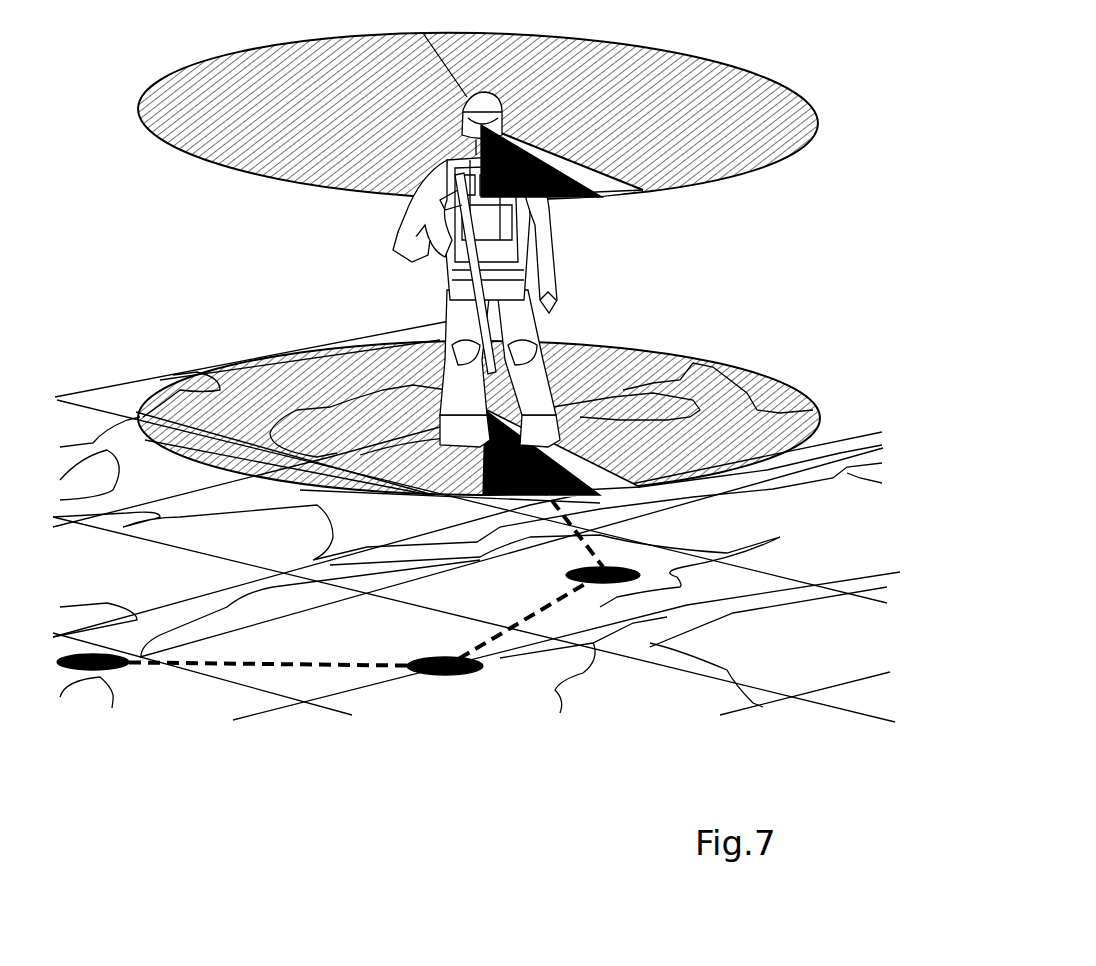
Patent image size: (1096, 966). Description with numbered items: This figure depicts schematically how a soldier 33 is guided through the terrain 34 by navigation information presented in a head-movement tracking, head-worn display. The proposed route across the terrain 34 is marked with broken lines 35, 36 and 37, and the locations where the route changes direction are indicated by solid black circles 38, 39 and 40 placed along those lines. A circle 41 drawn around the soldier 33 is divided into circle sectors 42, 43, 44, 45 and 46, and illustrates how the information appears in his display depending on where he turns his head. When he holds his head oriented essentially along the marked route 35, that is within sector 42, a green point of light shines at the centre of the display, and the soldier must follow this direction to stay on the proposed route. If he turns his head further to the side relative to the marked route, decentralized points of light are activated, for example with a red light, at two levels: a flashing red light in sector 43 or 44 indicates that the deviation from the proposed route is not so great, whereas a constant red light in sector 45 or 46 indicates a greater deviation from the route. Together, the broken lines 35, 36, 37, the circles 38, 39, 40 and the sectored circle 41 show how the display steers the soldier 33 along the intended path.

The soldier 33 is at (558, 252).
The terrain 34 is at (270, 703).
The broken line 35 is at (577, 532).
The broken line 36 is at (497, 640).
The broken line 37 is at (222, 667).
The solid black circle 38 is at (637, 715).
The solid black circle 39 is at (420, 675).
The solid black circle 40 is at (118, 668).
The circle 41 is at (165, 288).
The circle sector 42 is at (630, 197).
The circle sector 43 is at (430, 205).
The circle sector 44 is at (568, 203).
The circle sector 45 is at (195, 162).
The circle sector 46 is at (797, 152).